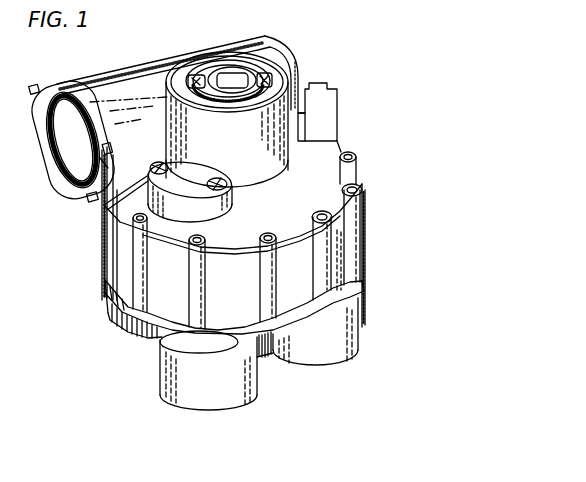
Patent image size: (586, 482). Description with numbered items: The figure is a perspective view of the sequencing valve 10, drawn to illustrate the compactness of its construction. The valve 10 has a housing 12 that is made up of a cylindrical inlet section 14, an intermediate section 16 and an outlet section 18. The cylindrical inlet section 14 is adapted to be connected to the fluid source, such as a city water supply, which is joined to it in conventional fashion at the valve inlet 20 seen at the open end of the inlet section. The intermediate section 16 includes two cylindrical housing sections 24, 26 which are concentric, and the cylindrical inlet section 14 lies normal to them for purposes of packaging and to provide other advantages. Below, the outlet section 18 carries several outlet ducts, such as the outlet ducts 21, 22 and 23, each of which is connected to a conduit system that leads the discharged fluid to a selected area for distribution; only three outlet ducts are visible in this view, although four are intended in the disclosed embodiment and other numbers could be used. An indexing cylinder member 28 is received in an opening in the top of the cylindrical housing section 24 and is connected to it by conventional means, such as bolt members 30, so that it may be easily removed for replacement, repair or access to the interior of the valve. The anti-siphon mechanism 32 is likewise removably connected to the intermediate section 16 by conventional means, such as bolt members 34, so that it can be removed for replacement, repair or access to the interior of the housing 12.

The valve 10 is at (410, 74).
The housing 12 is at (252, 36).
The cylindrical inlet section 14 is at (110, 78).
The intermediate section 16 is at (344, 237).
The outlet section 18 is at (364, 323).
The valve inlet 20 is at (72, 180).
The outlet duct 21 is at (330, 352).
The outlet duct 22 is at (212, 397).
The outlet duct 23 is at (128, 332).
The cylindrical housing section 24 is at (250, 155).
The cylindrical housing section 26 is at (121, 250).
The indexing cylinder member 28 is at (218, 64).
The bolt members 30 is at (196, 78).
The anti-siphon mechanism 32 is at (197, 193).
The bolt members 34 is at (219, 181).